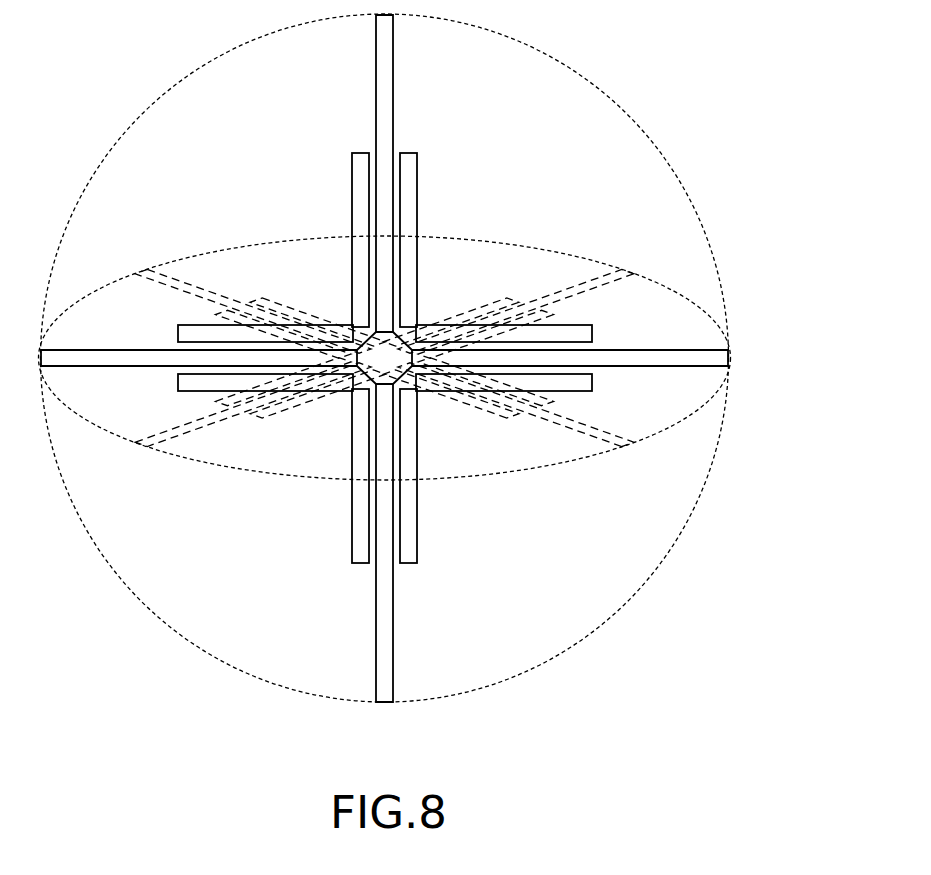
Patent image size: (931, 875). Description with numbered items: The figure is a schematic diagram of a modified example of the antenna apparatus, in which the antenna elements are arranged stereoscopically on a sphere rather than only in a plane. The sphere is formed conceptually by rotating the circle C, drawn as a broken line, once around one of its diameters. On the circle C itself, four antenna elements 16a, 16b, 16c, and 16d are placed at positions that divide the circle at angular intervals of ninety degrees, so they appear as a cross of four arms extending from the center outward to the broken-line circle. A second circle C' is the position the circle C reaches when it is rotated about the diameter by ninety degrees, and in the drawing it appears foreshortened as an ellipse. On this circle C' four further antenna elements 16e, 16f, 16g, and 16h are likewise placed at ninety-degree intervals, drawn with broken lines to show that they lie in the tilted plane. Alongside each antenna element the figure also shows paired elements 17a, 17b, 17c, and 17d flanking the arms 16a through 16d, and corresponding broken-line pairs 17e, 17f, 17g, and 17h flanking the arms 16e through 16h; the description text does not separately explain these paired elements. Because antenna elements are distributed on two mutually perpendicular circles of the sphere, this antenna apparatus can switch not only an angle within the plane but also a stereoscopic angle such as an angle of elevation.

The antenna element 16a is at (95, 349).
The antenna element 16b is at (395, 68).
The antenna element 16c is at (675, 349).
The antenna element 16d is at (395, 648).
The antenna element 16e is at (200, 288).
The antenna element 16f is at (530, 302).
The antenna element 16g is at (519, 412).
The antenna element 16h is at (203, 428).
The first pair of side electrodes 17a is at (195, 325).
The second pair of side electrodes 17b is at (418, 160).
The third pair of side electrodes 17c is at (575, 392).
The fourth pair of side electrodes 17d is at (352, 547).
The fifth pair of side electrodes (rotated) 17e is at (292, 307).
The sixth pair of side electrodes (rotated) 17f is at (554, 313).
The seventh pair of side electrodes (rotated) 17g is at (476, 408).
The eighth pair of side electrodes (rotated) 17h is at (222, 403).
The circle C is at (385, 358).
The circle C' is at (385, 350).